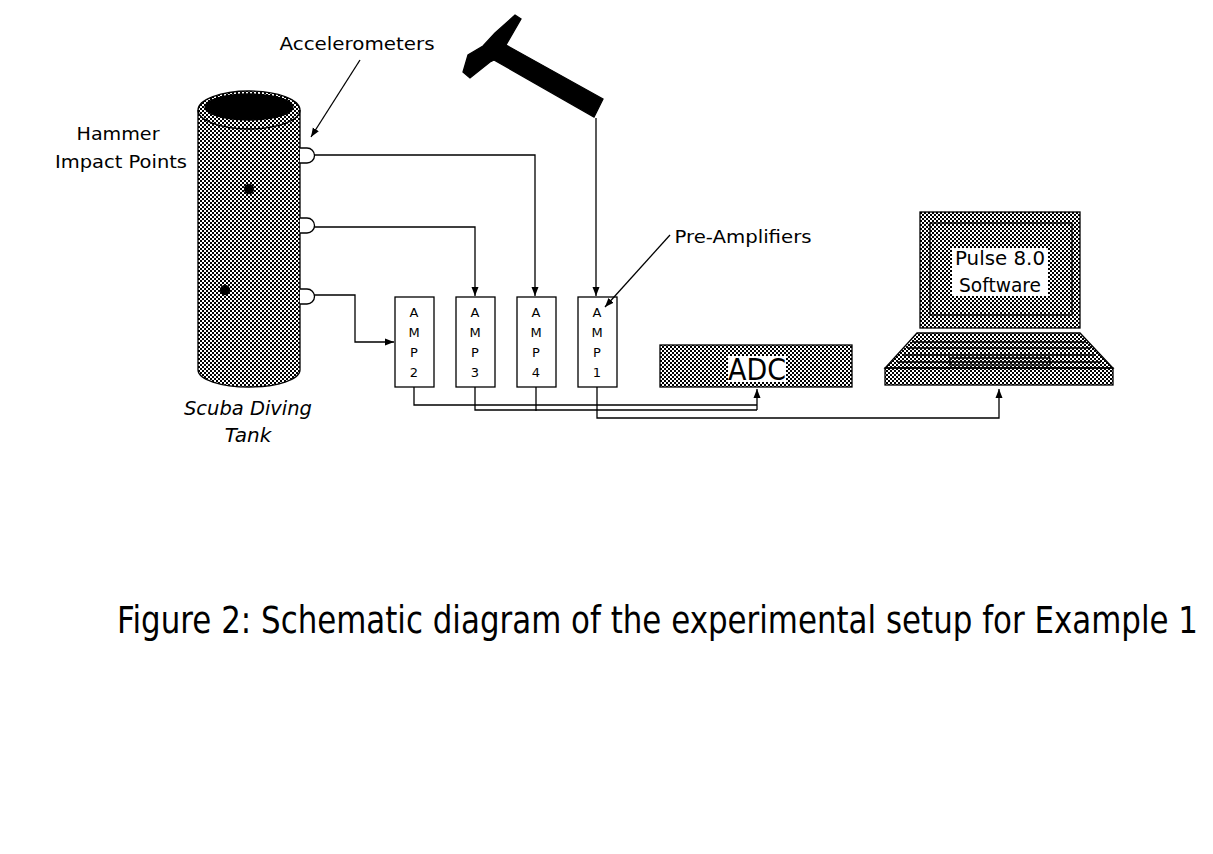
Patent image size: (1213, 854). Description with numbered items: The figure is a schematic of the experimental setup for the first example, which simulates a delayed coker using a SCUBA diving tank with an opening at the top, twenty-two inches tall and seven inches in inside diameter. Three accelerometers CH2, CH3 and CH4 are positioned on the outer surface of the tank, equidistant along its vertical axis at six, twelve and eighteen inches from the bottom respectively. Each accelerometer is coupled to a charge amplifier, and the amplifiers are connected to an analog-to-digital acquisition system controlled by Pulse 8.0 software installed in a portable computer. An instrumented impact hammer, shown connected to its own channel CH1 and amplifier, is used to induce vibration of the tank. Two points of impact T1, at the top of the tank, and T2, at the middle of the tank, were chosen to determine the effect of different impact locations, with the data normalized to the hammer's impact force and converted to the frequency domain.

The point of impact at the top of the tank T1 is at (163, 173).
The point of impact at the middle of the tank T2 is at (163, 175).
The hammer channel 1 CH1 is at (548, 155).
The accelerometer CH2 is at (347, 315).
The accelerometer CH3 is at (387, 257).
The accelerometer CH4 is at (417, 222).